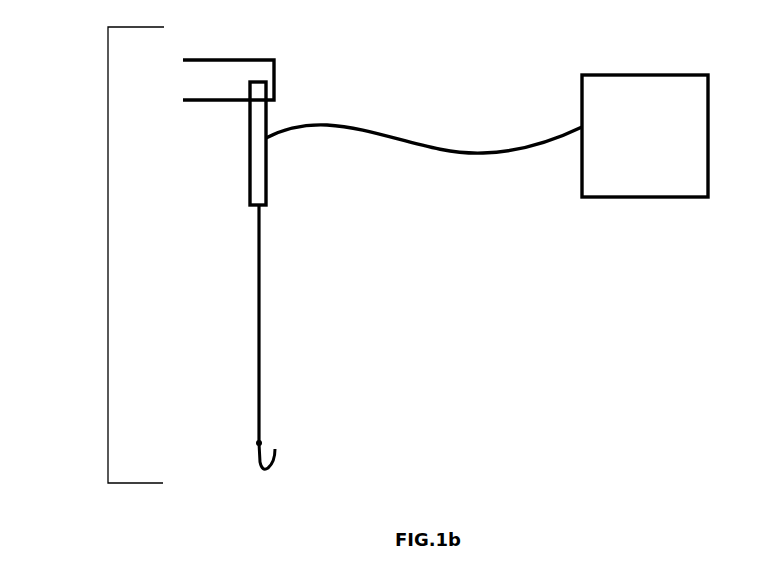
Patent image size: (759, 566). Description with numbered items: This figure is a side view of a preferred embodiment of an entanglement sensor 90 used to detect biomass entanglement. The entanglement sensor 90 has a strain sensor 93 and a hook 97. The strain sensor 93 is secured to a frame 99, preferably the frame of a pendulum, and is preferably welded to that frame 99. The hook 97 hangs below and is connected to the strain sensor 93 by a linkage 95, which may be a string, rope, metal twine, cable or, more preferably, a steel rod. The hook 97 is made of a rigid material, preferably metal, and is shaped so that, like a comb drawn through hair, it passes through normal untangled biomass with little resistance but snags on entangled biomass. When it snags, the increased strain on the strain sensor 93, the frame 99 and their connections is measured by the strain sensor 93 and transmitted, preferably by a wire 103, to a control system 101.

The entanglement sensor 90 is at (108, 257).
The strain sensor 93 is at (266, 157).
The linkage 95 is at (259, 235).
The hook 97 is at (272, 458).
The frame 99 is at (275, 82).
The control system 101 is at (645, 136).
The wire 103 is at (483, 150).